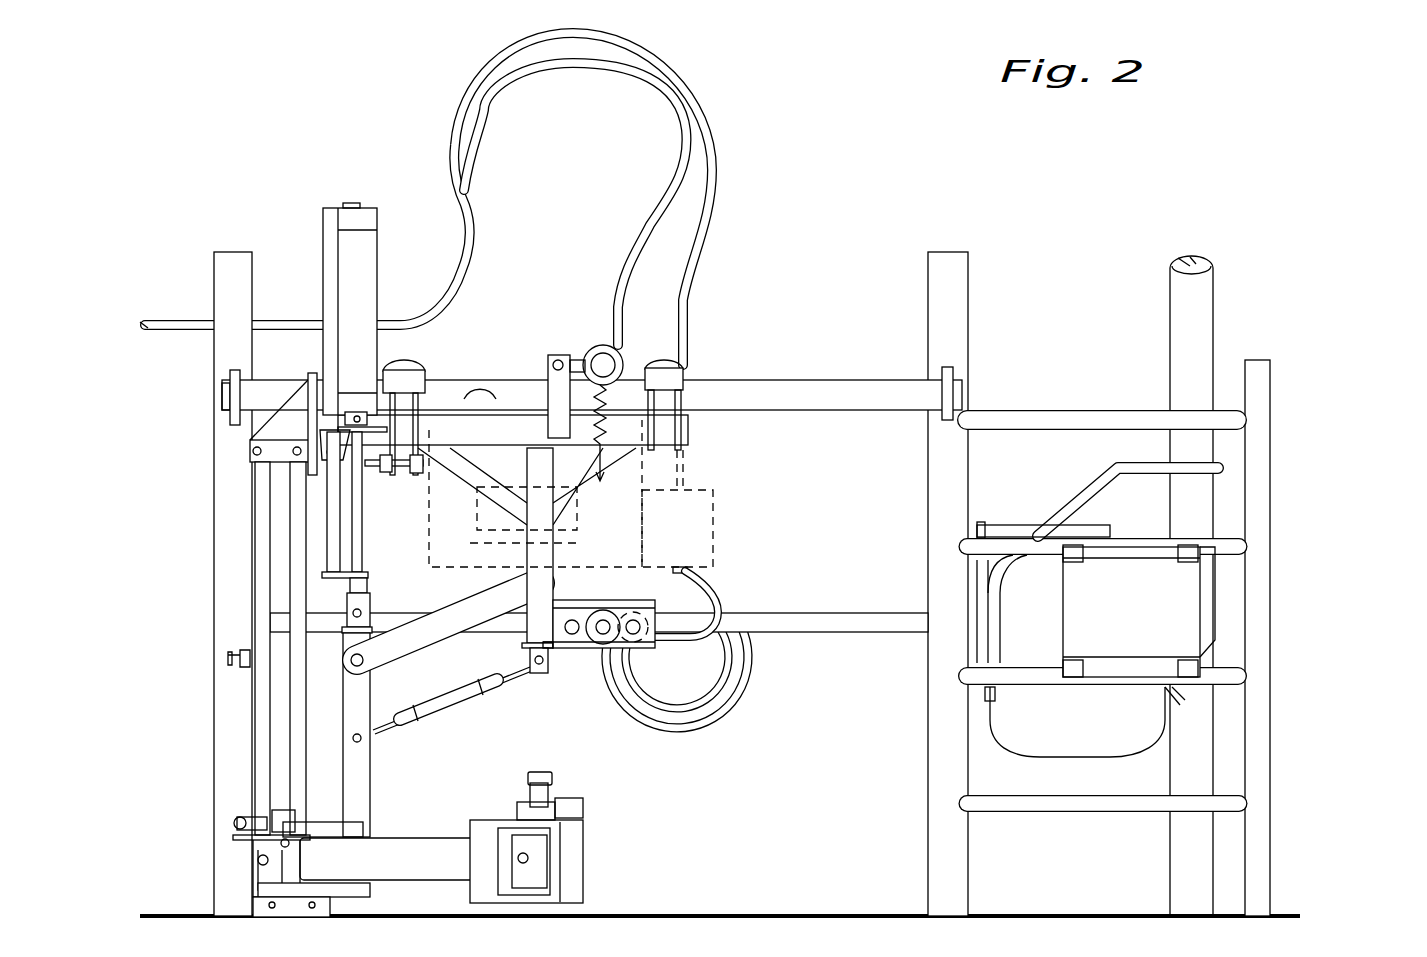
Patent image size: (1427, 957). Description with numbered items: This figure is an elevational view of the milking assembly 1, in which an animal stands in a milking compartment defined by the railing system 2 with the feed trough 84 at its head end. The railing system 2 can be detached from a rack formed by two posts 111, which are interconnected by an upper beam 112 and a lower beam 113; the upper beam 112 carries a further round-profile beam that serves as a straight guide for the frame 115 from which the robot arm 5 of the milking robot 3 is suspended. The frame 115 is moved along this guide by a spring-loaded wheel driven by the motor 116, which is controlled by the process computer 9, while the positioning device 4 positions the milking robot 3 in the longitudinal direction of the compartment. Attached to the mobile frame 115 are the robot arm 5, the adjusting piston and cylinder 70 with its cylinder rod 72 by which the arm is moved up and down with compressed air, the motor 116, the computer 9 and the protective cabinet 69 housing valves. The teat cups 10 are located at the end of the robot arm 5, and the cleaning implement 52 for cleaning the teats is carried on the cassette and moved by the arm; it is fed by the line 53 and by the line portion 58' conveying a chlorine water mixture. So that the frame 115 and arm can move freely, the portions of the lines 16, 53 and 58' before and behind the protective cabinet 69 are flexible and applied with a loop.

The milking assembly 1 is at (838, 272).
The railing system 2 is at (1073, 418).
The milking robot 3 is at (513, 317).
The positioning device 4 is at (232, 462).
The robot arm 5 is at (403, 848).
The process computer 9 is at (452, 560).
The teat cups 10 is at (583, 807).
The line 16 is at (722, 195).
The cleaning implement 52 is at (578, 600).
The line 53 is at (683, 720).
The line portion 58' is at (687, 629).
The protective cabinet 69 is at (712, 513).
The adjusting piston and cylinder 70 is at (370, 260).
The cylinder rod 72 is at (362, 552).
The feed trough 84 is at (1110, 753).
The posts 111 is at (222, 270).
The upper beam 112 is at (822, 378).
The lower beam 113 is at (820, 630).
The frame 115 is at (580, 490).
The motor 116 is at (596, 345).